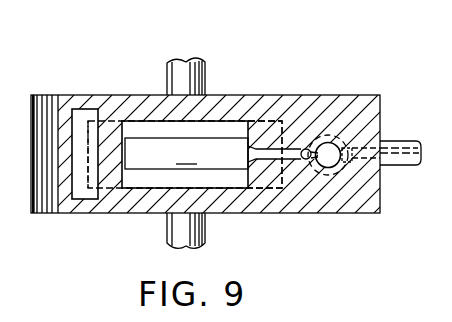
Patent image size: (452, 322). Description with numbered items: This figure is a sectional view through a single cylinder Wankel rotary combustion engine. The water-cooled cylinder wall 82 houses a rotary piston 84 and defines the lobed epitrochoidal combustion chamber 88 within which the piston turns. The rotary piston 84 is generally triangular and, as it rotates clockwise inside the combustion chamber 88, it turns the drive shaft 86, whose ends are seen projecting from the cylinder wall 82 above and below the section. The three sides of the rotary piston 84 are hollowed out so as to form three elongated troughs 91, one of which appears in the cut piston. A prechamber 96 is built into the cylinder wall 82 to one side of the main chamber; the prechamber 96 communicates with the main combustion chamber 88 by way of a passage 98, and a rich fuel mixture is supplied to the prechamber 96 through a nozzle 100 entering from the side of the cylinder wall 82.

The cylinder wall 82 is at (262, 100).
The rotary piston 84 is at (132, 128).
The drive shaft 86 is at (188, 75).
The combustion chamber 88 is at (86, 124).
The trough 91 is at (187, 155).
The prechamber 96 is at (334, 133).
The passage 98 is at (290, 160).
The nozzle 100 is at (403, 140).